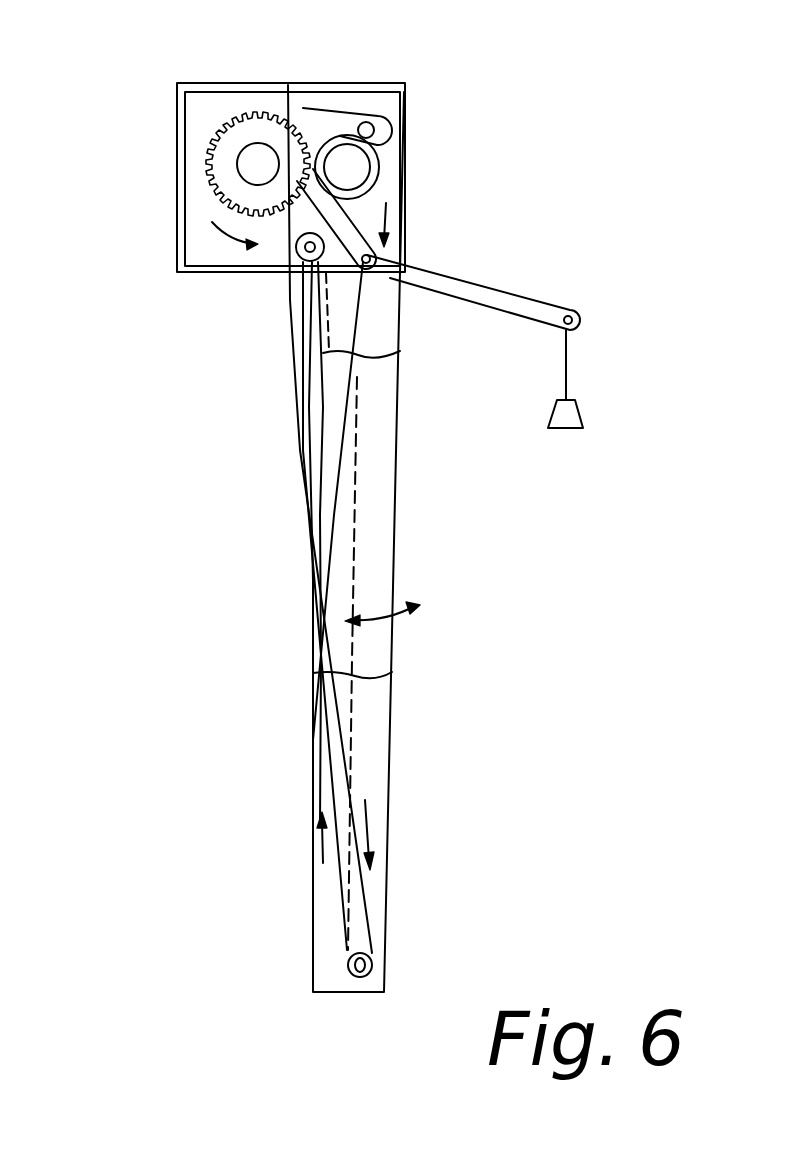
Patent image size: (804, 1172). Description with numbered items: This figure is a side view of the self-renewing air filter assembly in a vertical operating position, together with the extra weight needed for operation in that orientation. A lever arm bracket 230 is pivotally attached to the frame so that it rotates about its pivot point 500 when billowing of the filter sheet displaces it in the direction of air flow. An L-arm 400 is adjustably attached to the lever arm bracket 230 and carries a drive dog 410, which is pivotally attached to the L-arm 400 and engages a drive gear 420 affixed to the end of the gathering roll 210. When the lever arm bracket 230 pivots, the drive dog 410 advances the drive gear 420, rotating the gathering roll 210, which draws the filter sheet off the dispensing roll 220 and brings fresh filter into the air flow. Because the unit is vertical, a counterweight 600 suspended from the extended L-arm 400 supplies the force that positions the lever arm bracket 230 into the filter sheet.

The drive gear 420 is at (233, 122).
The gathering roll 210 is at (250, 162).
The dispensing roll 220 is at (363, 167).
The drive dog 410 is at (350, 227).
The L-arm 400 is at (473, 290).
The counterweight 600 is at (570, 413).
The pivot point 500 is at (290, 250).
The lever arm bracket 230 is at (317, 365).